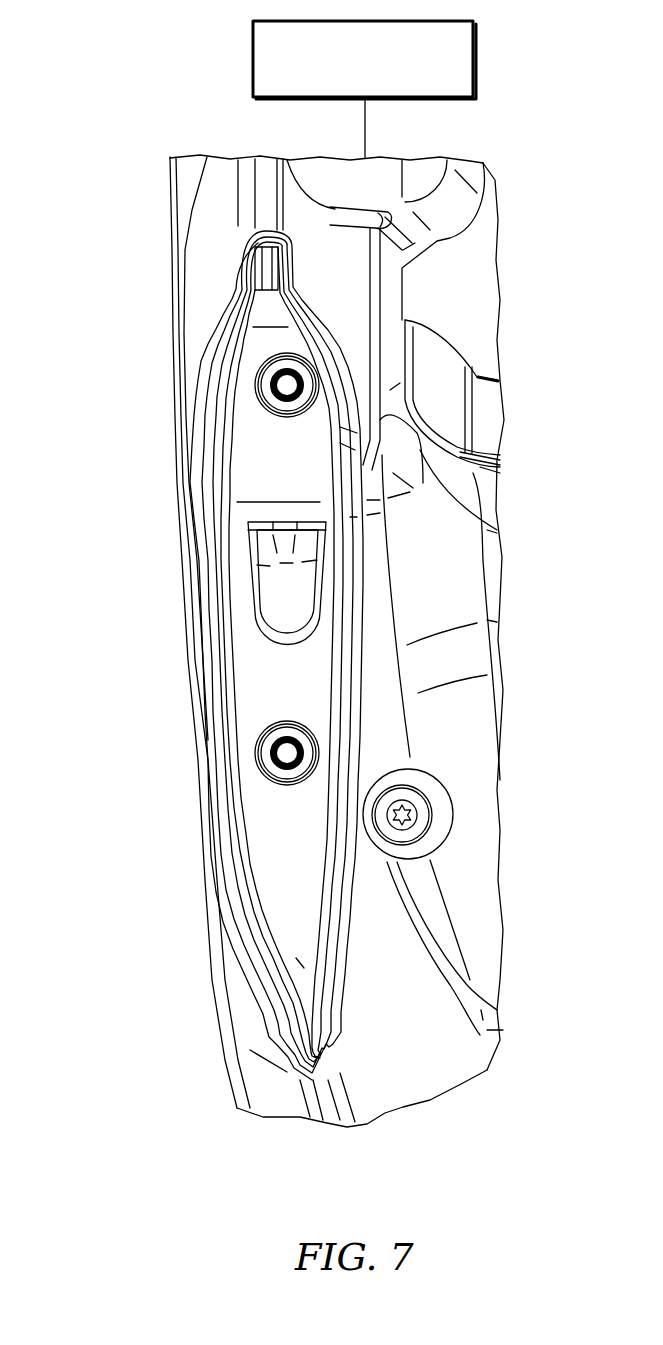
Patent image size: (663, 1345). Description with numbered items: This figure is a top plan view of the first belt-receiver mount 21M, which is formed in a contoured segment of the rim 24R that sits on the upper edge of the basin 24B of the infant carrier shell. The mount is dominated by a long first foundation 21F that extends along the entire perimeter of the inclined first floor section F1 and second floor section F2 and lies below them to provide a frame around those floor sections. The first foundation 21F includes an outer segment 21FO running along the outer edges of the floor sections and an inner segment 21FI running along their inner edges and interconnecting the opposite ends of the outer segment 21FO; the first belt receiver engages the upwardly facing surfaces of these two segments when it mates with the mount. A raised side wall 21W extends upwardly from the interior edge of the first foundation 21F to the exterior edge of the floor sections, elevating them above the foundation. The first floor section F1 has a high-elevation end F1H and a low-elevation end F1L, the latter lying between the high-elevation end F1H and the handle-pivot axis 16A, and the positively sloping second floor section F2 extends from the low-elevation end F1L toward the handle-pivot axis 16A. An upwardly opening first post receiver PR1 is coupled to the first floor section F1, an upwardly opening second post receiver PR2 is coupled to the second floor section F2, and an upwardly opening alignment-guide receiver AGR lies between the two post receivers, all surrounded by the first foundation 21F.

The handle-pivot axis 16A is at (253, 61).
The first foundation 21F is at (230, 258).
The inner segment 21FI is at (337, 383).
The outer segment 21FO is at (227, 350).
The raised side wall 21W is at (220, 331).
The first belt-receiver mount 21M is at (208, 308).
The rim 24R is at (248, 208).
The basin 24B is at (486, 975).
The first post receiver PR1 is at (261, 773).
The second post receiver PR2 is at (263, 400).
The first floor section F1 is at (305, 854).
The second floor section F2 is at (300, 476).
The low-elevation end F1L is at (242, 512).
The high-elevation end F1H is at (300, 963).
The alignment-guide receiver AGR is at (283, 607).